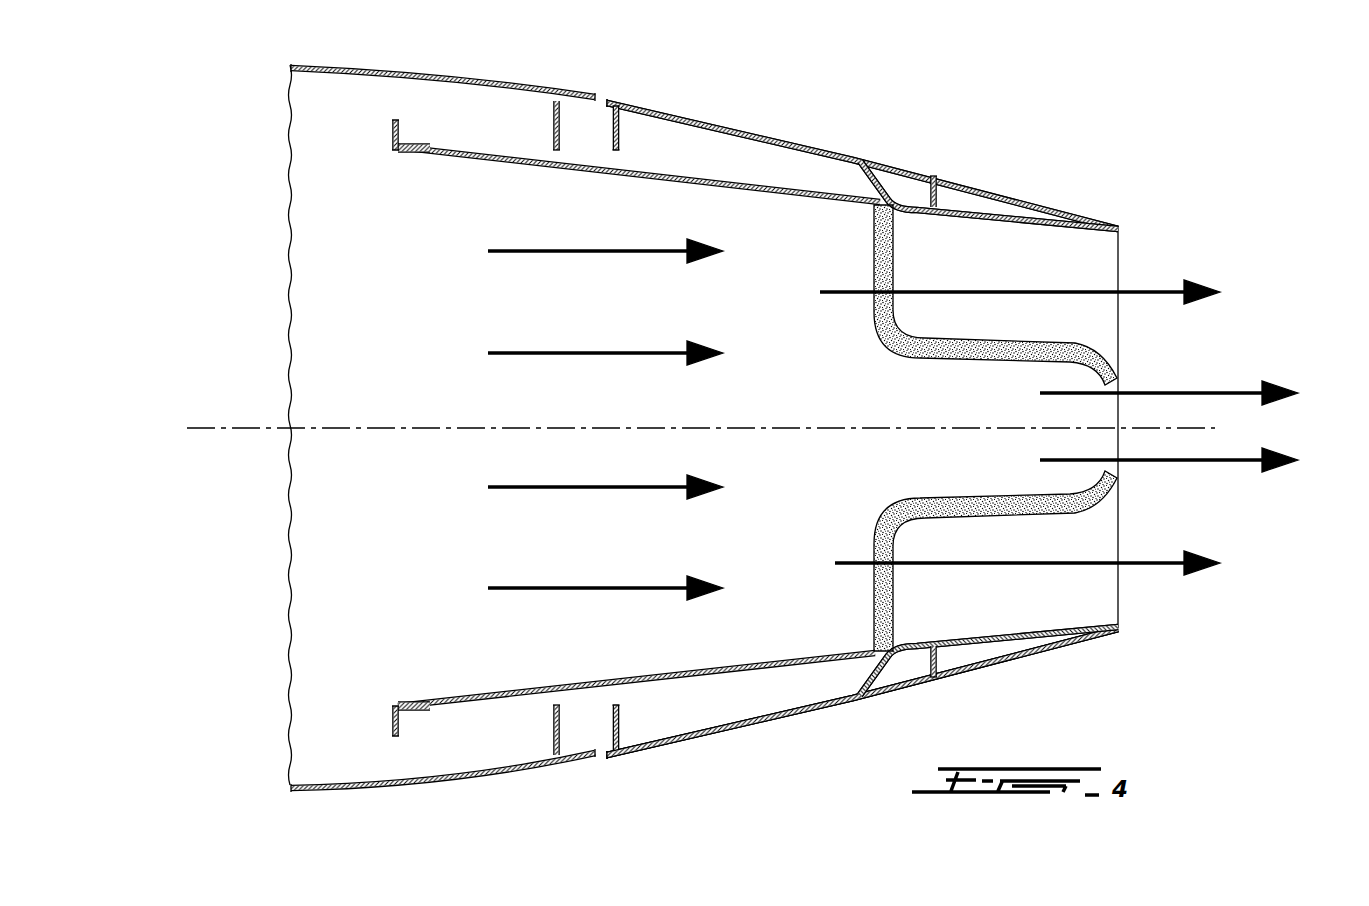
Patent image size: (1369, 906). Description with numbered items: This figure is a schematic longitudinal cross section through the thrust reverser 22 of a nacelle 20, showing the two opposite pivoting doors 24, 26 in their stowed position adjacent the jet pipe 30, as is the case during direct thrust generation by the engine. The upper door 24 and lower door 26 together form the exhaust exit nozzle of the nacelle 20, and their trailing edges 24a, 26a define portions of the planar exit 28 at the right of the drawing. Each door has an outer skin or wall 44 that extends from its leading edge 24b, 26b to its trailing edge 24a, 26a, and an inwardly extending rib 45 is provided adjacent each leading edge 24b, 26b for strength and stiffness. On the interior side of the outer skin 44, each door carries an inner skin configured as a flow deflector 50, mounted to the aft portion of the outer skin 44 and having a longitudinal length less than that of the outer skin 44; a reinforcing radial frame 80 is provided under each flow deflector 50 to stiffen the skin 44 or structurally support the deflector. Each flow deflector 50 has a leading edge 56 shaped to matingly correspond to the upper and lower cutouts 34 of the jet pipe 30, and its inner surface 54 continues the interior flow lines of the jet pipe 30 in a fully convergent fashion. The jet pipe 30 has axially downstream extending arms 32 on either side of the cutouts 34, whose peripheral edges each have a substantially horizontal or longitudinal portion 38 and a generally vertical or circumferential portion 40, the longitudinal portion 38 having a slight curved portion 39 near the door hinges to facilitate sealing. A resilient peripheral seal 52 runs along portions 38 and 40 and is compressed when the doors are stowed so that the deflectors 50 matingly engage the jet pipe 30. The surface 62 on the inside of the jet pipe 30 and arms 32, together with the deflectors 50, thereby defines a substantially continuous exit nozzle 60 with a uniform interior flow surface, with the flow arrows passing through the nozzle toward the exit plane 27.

The nacelle 20 is at (262, 765).
The thrust reverser 22 is at (783, 756).
The upper pivoting door 24 is at (759, 410).
The trailing edge of upper door 24a is at (1120, 228).
The leading edge of upper door 24b is at (601, 95).
The lower pivoting door 26 is at (756, 732).
The trailing edge of lower door 26a is at (1120, 627).
The leading edge of lower door 26b is at (601, 760).
The exit plane 27 is at (1125, 253).
The planar exit 28 is at (1169, 390).
The jet pipe 30 is at (460, 690).
The arm 32 is at (1075, 510).
The cutout 34 is at (1020, 431).
The longitudinal portion of peripheral edge 38 is at (972, 333).
The curved portion 39 is at (1114, 344).
The circumferential portion of peripheral edge 40 is at (1030, 295).
The outer skin 44 is at (710, 108).
The rib 45 is at (628, 137).
The flow deflector 50 is at (962, 210).
The peripheral seal 52 is at (1018, 493).
The inner surface of flow deflector 54 is at (996, 226).
The leading edge of flow deflector 56 is at (862, 155).
The exit nozzle 60 is at (654, 414).
The inside surface of jet pipe 62 is at (620, 187).
The reinforcing radial frame 80 is at (932, 180).